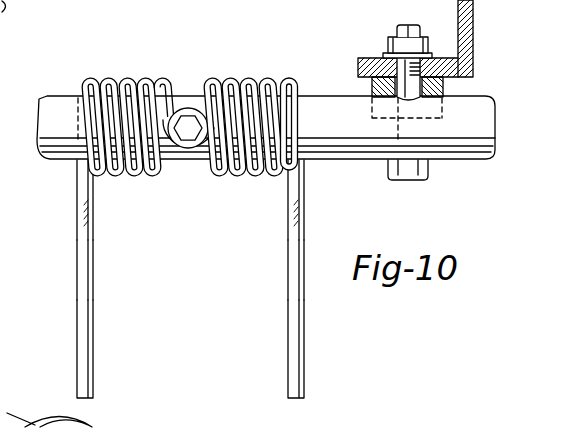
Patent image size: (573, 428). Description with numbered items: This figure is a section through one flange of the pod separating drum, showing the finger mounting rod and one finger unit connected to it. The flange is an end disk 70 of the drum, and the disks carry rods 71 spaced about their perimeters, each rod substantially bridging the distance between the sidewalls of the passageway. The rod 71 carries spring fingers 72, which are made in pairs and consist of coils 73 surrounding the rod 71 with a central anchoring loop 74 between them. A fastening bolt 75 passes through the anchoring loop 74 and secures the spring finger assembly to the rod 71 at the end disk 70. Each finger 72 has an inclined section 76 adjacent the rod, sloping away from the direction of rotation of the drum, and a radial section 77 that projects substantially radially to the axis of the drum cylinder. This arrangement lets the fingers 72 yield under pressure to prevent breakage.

The end disk 70 is at (370, 58).
The rod 71 is at (362, 148).
The spring finger 72 is at (183, 279).
The coil 73 is at (190, 115).
The central anchoring loop 74 is at (183, 157).
The fastening bolt 75 is at (188, 123).
The inclined section 76 is at (75, 186).
The radial section 77 is at (78, 338).